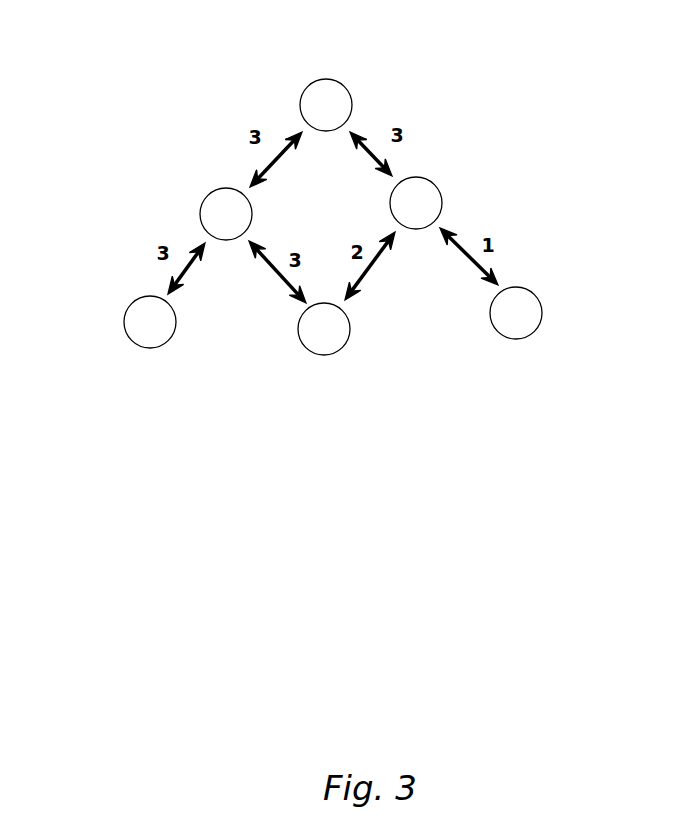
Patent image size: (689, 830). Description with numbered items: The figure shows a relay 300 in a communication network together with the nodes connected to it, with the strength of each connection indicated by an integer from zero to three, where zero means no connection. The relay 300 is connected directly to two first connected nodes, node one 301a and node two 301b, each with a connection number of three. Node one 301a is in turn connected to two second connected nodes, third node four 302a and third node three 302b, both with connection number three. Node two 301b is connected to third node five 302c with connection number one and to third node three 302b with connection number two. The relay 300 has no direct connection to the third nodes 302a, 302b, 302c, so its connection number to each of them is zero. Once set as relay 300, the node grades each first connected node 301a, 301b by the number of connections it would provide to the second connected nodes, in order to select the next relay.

The relay 300 is at (302, 90).
The first connected node 301a is at (208, 200).
The first connected node 301b is at (438, 190).
The second connected node 302a is at (123, 318).
The second connected node 302b is at (350, 329).
The second connected node 302c is at (532, 298).